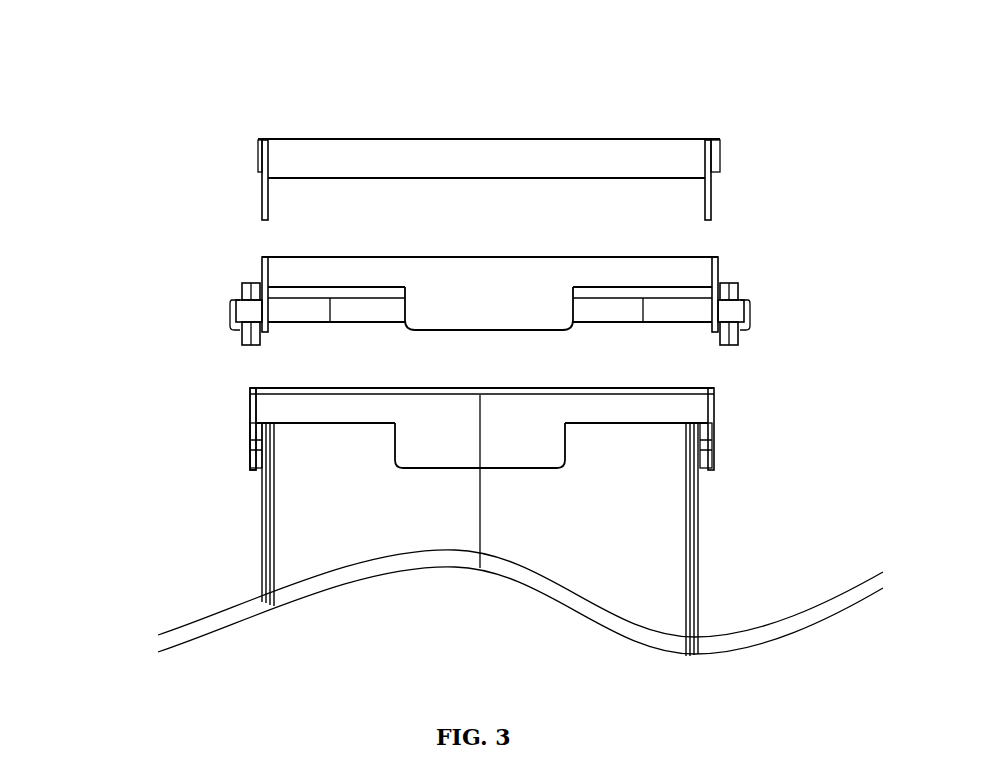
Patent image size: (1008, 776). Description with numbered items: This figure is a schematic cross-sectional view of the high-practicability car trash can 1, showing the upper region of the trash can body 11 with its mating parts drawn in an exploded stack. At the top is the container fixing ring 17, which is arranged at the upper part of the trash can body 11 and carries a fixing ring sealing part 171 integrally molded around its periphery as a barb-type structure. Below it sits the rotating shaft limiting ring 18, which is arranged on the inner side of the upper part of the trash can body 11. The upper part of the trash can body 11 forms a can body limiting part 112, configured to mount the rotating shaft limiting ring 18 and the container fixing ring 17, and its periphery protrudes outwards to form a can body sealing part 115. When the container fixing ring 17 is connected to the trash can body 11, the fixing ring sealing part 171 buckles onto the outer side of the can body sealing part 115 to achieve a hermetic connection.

The high-practicability car trash can 1 is at (428, 95).
The trash can body 11 is at (662, 542).
The can body limiting part 112 is at (665, 408).
The can body sealing part 115 is at (250, 410).
The container fixing ring 17 is at (357, 148).
The fixing ring sealing part 171 is at (258, 158).
The rotating shaft limiting ring 18 is at (262, 257).